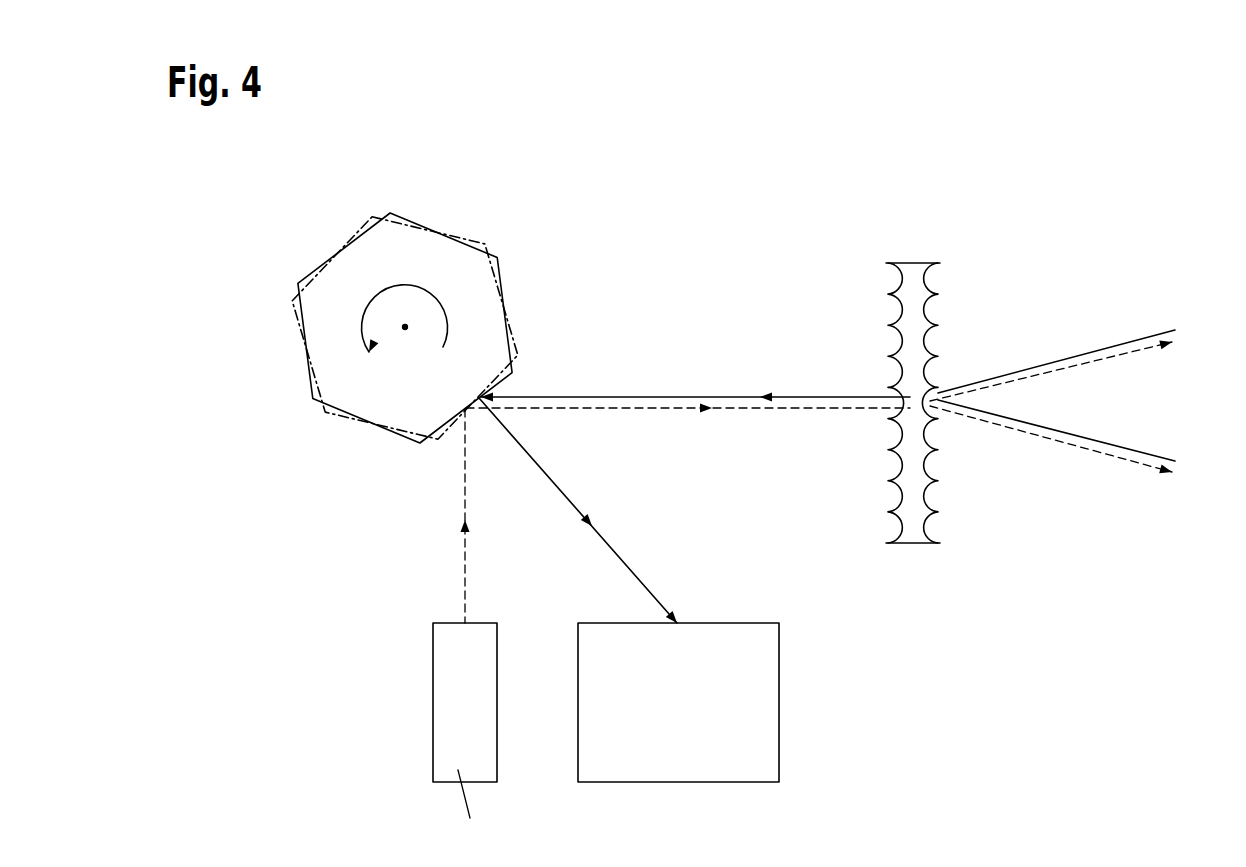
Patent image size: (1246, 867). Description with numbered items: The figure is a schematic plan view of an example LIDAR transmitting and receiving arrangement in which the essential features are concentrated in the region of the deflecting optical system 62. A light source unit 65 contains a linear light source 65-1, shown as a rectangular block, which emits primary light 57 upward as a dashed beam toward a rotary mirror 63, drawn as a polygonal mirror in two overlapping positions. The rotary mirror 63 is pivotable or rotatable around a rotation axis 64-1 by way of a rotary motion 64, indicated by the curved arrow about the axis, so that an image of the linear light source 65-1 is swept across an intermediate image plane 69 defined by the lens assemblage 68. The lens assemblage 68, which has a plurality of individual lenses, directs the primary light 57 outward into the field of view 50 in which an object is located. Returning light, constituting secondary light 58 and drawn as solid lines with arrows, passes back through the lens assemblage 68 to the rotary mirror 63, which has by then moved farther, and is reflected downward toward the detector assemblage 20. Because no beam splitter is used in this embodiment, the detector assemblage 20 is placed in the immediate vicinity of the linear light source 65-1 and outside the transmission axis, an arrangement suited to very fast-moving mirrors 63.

The detector assemblage 20 is at (760, 705).
The field of view 50 is at (1206, 400).
The primary light 57 is at (650, 411).
The secondary light 58 is at (690, 397).
The deflecting optical system 62 is at (713, 193).
The rotary mirror 63 is at (326, 368).
The rotary motion 64 is at (405, 284).
The rotation axis 64-1 is at (405, 330).
The light source unit 65 is at (421, 730).
The linear light source 65-1 is at (448, 696).
The lens assemblage 68 is at (913, 263).
The intermediate image plane 69 is at (867, 361).